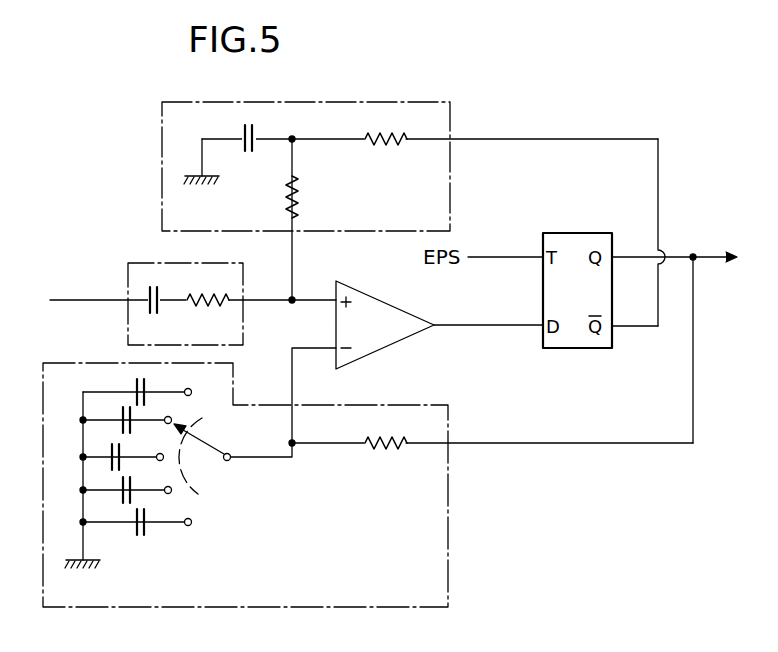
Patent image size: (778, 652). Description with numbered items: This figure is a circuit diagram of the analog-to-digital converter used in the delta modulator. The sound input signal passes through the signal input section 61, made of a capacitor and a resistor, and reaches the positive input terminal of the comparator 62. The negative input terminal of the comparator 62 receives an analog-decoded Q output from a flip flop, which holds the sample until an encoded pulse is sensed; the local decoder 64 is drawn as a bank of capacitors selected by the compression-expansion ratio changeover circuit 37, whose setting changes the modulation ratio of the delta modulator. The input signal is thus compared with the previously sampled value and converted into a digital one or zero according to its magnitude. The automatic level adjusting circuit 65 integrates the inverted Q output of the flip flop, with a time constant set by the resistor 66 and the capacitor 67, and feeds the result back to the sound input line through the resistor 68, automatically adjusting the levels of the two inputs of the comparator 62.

The compression-expansion ratio changeover circuit 37 is at (198, 476).
The signal input section 61 is at (168, 263).
The comparator 62 is at (392, 345).
The local decoder 64 is at (448, 497).
The automatic level adjusting circuit 65 is at (450, 117).
The resistor 66 is at (390, 137).
The capacitor 67 is at (254, 145).
The resistor 68 is at (296, 185).